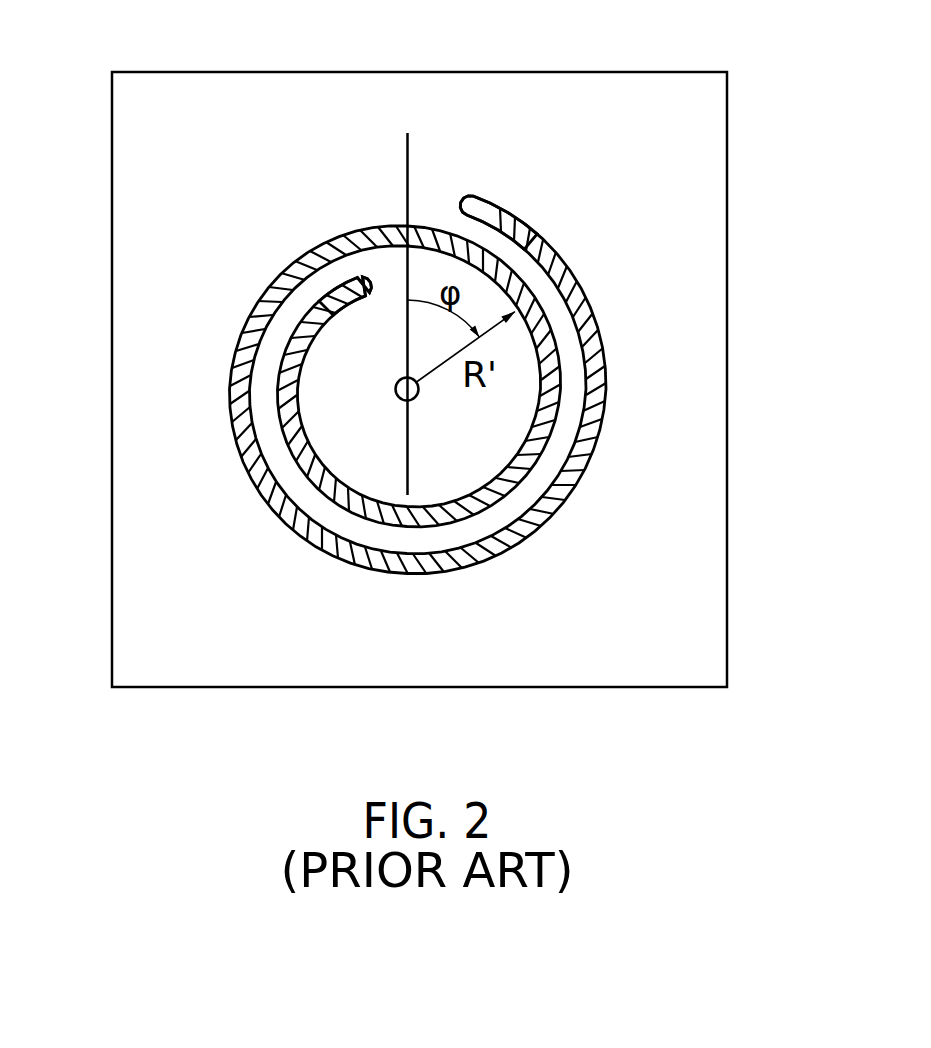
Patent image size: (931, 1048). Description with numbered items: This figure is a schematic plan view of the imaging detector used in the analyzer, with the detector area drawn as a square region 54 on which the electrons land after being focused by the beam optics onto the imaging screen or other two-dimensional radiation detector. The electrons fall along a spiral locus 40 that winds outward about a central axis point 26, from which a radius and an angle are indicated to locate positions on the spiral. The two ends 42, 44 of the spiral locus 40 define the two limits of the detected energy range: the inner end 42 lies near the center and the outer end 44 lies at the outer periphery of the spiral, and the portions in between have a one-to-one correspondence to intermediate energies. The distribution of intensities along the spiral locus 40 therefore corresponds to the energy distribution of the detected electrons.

The axis / center of rotation 26 is at (395, 389).
The spiral locus 40 is at (608, 376).
The end of spiral locus 42 is at (355, 278).
The end of spiral locus 44 is at (490, 198).
The substrate / plate 54 is at (350, 635).